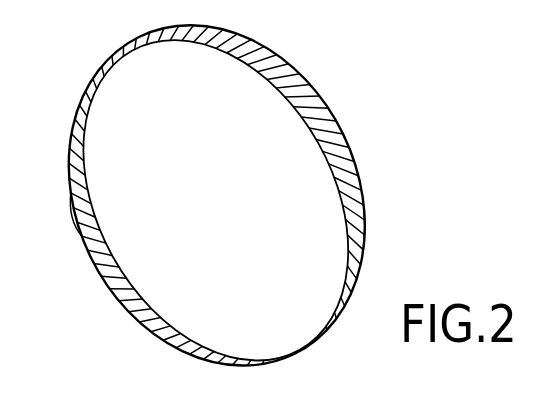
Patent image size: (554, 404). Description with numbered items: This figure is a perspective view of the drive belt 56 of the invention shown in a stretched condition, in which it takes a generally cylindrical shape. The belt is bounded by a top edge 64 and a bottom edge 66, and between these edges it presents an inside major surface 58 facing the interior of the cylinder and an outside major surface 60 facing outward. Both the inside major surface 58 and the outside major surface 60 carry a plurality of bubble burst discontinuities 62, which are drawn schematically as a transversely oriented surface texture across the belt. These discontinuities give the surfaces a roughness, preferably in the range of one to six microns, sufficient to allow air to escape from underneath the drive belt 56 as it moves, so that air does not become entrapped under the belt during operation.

The drive belt 56 is at (267, 202).
The inside major surface 58 is at (88, 202).
The outside major surface 60 is at (299, 88).
The bubble burst discontinuities 62 is at (133, 294).
The top edge 64 is at (86, 246).
The bottom edge 66 is at (365, 212).